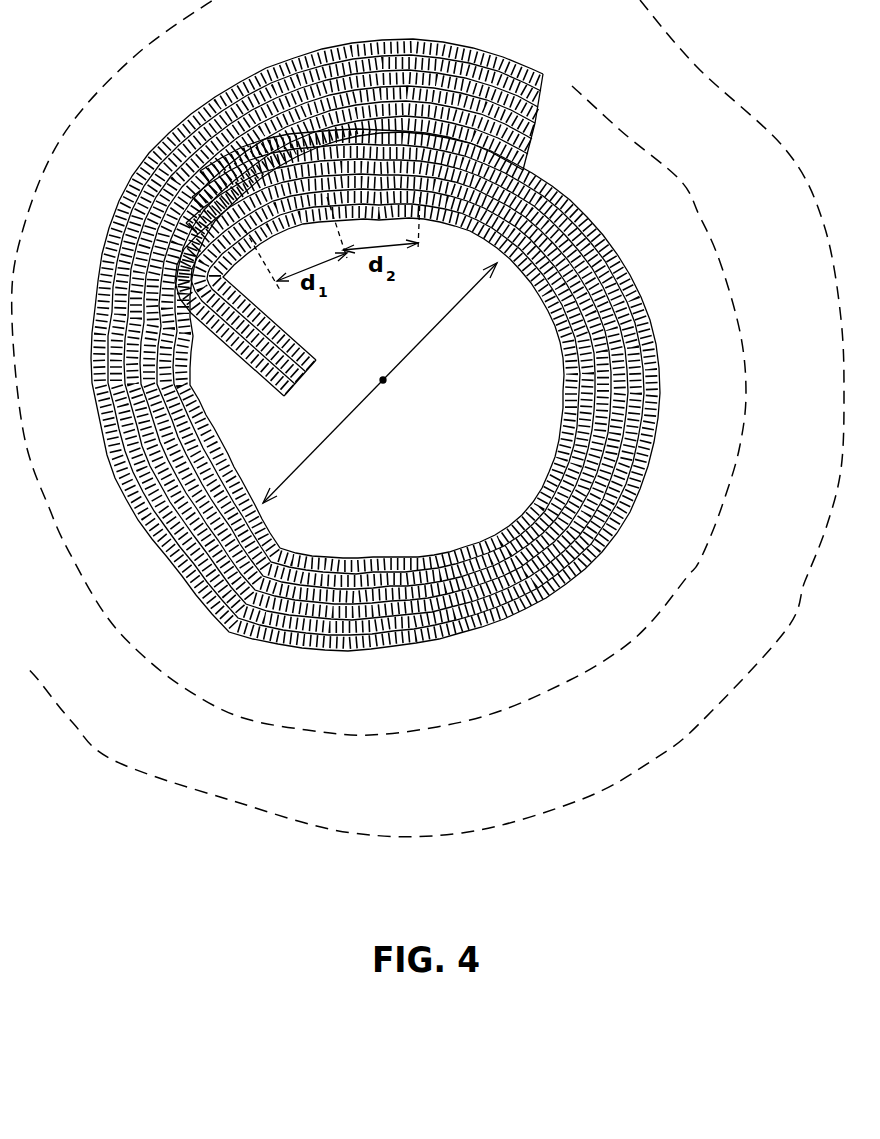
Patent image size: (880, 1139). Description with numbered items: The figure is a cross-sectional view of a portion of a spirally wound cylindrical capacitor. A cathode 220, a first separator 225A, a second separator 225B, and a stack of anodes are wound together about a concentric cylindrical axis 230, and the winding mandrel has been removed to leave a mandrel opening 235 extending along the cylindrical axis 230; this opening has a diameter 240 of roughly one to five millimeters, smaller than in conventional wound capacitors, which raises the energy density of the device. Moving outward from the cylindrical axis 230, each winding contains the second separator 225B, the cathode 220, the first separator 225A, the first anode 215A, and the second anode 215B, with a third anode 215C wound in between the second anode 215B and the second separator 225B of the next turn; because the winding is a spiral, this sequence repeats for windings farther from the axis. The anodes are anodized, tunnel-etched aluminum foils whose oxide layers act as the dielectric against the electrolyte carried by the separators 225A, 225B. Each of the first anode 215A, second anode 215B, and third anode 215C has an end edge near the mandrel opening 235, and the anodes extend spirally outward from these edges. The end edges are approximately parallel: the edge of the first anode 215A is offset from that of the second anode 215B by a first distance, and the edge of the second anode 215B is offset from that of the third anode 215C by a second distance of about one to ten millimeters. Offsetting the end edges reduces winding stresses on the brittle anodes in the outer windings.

The first anode 215A is at (540, 114).
The second anode 215B is at (543, 98).
The third anode 215C is at (543, 78).
The cathode 220 is at (532, 148).
The first separator 225A is at (536, 132).
The second separator 225B is at (527, 164).
The cylindrical axis 230 is at (386, 383).
The mandrel opening 235 is at (430, 507).
The diameter 240 is at (432, 330).